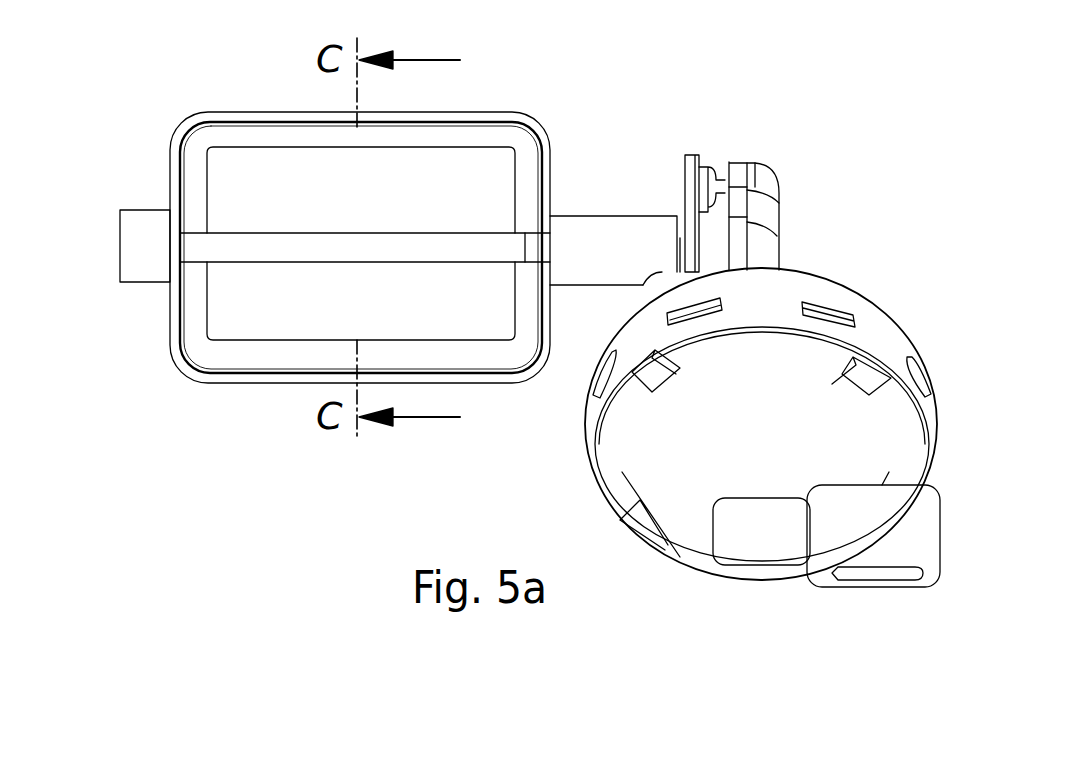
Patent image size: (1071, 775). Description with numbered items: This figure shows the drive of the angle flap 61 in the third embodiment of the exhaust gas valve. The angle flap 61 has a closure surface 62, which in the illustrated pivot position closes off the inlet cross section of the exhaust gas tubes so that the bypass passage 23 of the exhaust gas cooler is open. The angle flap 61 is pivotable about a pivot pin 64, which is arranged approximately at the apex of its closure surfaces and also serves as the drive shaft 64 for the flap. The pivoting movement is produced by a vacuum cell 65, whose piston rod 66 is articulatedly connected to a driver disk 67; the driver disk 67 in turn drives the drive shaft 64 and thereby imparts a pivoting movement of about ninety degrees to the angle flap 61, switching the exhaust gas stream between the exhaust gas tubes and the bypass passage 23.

The angle flap 61 is at (253, 247).
The closure surface 62 is at (361, 190).
The bypass passage 23 is at (361, 301).
The pivot pin 64 is at (680, 248).
The vacuum cell 65 is at (690, 523).
The piston rod 66 is at (778, 203).
The driver disk 67 is at (693, 167).